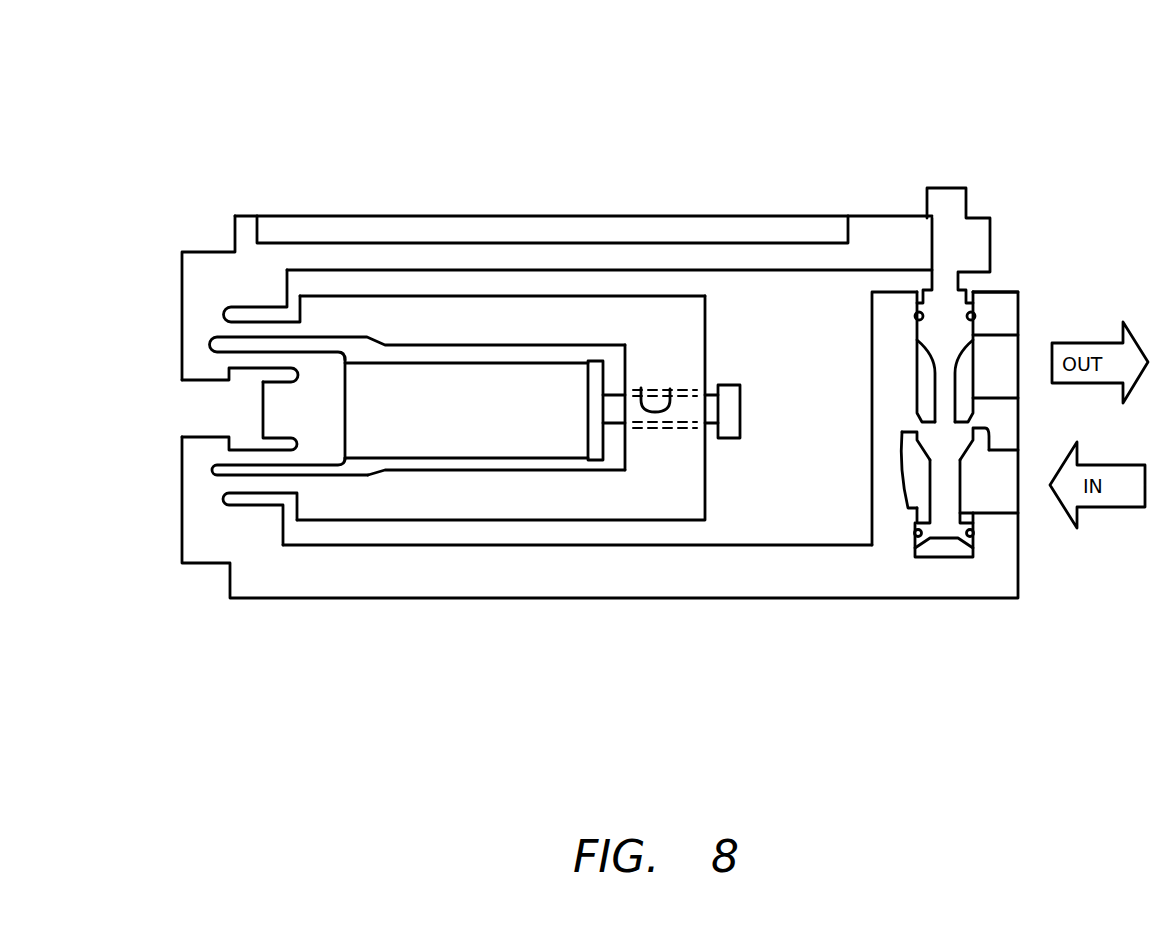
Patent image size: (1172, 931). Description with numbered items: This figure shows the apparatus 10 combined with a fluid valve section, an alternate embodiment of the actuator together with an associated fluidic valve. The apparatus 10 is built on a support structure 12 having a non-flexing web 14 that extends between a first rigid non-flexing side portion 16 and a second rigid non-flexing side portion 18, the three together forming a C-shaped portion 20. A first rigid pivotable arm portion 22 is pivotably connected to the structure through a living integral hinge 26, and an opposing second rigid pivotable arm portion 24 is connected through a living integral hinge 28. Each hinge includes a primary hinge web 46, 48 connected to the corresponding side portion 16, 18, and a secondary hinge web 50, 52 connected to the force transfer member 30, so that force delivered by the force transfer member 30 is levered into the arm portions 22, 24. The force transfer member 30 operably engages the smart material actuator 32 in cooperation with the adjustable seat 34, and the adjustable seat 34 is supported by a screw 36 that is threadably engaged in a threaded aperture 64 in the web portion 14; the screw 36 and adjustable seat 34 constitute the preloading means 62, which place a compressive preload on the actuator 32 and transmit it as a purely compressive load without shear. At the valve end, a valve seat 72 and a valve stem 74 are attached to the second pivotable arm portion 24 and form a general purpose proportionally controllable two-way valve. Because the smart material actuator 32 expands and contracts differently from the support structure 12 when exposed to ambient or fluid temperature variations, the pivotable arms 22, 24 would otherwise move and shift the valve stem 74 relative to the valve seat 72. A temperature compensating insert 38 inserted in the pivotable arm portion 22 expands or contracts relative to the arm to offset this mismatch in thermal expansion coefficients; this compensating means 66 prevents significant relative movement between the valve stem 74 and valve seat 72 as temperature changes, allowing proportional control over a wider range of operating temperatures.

The apparatus 10 is at (679, 88).
The support structure 12 is at (740, 514).
The web portion 14 is at (680, 497).
The first rigid non-flexing side portion 16 is at (468, 315).
The second rigid non-flexing side portion 18 is at (437, 493).
The C-shaped portion 20 is at (561, 505).
The first pivotable arm portion 22 is at (593, 253).
The second pivotable arm portion 24 is at (968, 582).
The living integral hinge 26 is at (210, 337).
The living integral hinge 28 is at (206, 503).
The force transfer member 30 is at (307, 415).
The smart material actuator 32 is at (532, 420).
The adjustable seat 34 is at (593, 438).
The screw 36 is at (740, 413).
The temperature compensating insert 38 is at (370, 216).
The primary hinge web 46 is at (292, 332).
The primary hinge web 48 is at (283, 485).
The secondary hinge web 50 is at (253, 362).
The secondary hinge web 52 is at (247, 442).
The preloading means 62 is at (722, 362).
The threaded aperture 64 is at (650, 386).
The compensating means 66 is at (848, 125).
The valve seat 72 is at (970, 423).
The valve stem 74 is at (947, 493).